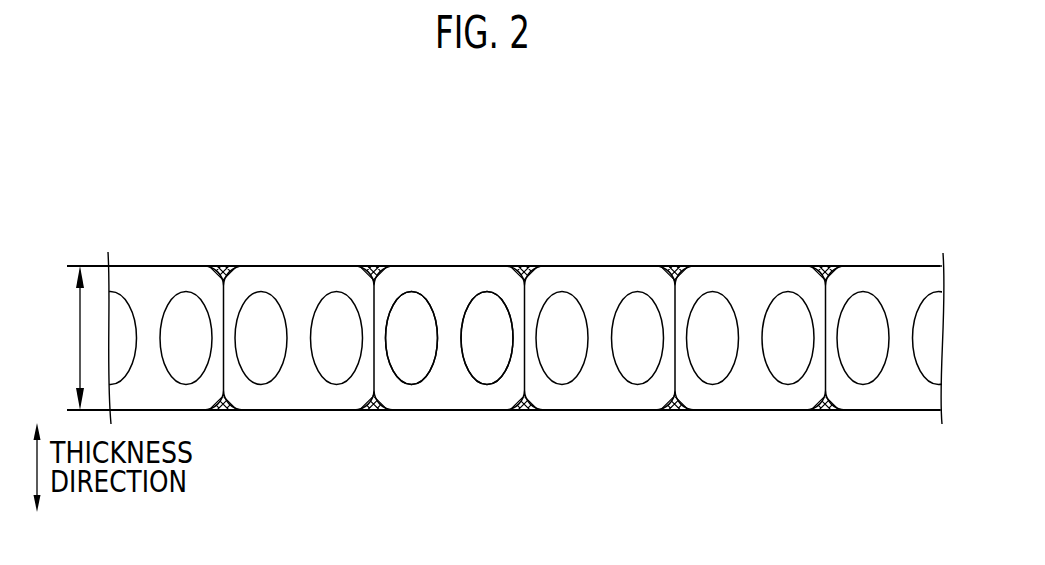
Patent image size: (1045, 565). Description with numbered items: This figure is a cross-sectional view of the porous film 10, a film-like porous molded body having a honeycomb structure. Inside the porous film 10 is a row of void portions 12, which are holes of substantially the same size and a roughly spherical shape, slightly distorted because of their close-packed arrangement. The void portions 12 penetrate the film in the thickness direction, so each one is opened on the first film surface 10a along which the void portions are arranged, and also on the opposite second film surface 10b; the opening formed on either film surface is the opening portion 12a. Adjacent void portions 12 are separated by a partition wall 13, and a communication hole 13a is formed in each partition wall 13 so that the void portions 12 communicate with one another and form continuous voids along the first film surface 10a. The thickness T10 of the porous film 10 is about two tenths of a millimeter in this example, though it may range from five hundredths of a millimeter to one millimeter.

The porous film 10 is at (148, 242).
The first film surface 10a is at (858, 266).
The second film surface 10b is at (853, 410).
The void portion 12 is at (297, 277).
The opening portion 12a is at (440, 265).
The partition wall 13 is at (563, 388).
The communication hole 13a is at (413, 372).
The thickness of the porous film T10 is at (60, 338).